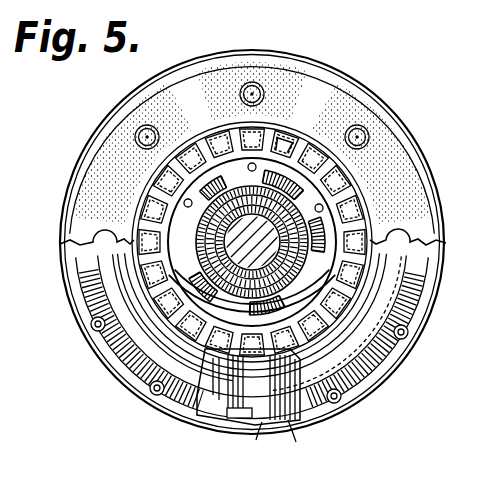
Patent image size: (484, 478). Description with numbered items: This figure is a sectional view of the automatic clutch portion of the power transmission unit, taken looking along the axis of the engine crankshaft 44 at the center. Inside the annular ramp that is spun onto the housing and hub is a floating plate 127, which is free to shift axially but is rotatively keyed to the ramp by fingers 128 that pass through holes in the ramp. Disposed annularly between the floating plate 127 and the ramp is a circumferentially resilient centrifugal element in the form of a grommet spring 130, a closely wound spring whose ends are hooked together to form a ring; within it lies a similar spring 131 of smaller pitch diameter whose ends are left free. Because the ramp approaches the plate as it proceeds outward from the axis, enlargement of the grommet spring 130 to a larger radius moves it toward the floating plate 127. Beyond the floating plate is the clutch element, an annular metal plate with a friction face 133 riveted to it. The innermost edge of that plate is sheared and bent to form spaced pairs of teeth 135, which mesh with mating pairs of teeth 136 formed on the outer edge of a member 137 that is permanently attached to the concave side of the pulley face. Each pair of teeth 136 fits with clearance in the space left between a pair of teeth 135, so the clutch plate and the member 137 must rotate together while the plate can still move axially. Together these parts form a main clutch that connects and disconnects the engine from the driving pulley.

The crankshaft 44 is at (282, 231).
The floating plate 127 is at (294, 420).
The fingers 128 is at (150, 391).
The grommet spring 130 is at (192, 414).
The spring 131 is at (262, 432).
The friction face 133 is at (248, 74).
The teeth 135 is at (214, 146).
The teeth 136 is at (292, 142).
The member 137 is at (193, 189).